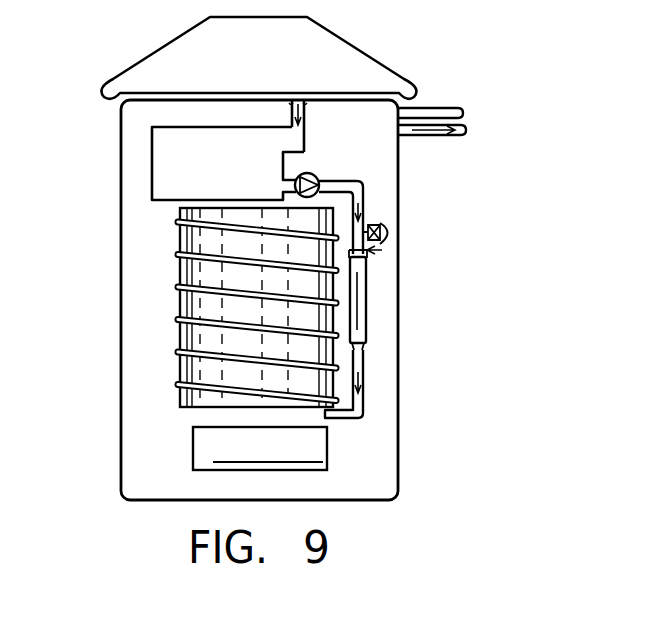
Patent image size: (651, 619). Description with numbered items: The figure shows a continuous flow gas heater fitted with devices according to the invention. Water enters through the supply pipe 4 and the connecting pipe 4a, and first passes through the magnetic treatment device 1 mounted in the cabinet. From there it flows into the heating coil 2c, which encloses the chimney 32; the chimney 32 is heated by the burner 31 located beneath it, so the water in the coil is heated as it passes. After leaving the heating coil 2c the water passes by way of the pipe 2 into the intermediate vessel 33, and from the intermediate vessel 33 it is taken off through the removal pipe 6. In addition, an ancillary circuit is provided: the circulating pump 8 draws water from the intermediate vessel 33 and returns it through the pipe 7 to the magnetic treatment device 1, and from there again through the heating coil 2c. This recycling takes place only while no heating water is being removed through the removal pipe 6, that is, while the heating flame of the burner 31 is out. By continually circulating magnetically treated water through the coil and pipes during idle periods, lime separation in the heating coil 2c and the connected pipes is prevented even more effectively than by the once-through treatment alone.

The magnetic treatment device 1 is at (357, 316).
The return pipe 2 is at (365, 397).
The heating coil 2c is at (190, 336).
The supply pipe 4 is at (443, 107).
The connecting pipe 4a is at (377, 229).
The removal pipe 6 is at (447, 137).
The pipe 7 is at (365, 193).
The circulating pump 8 is at (313, 176).
The burner 31 is at (198, 443).
The chimney 32 is at (192, 275).
The intermediate vessel 33 is at (163, 153).